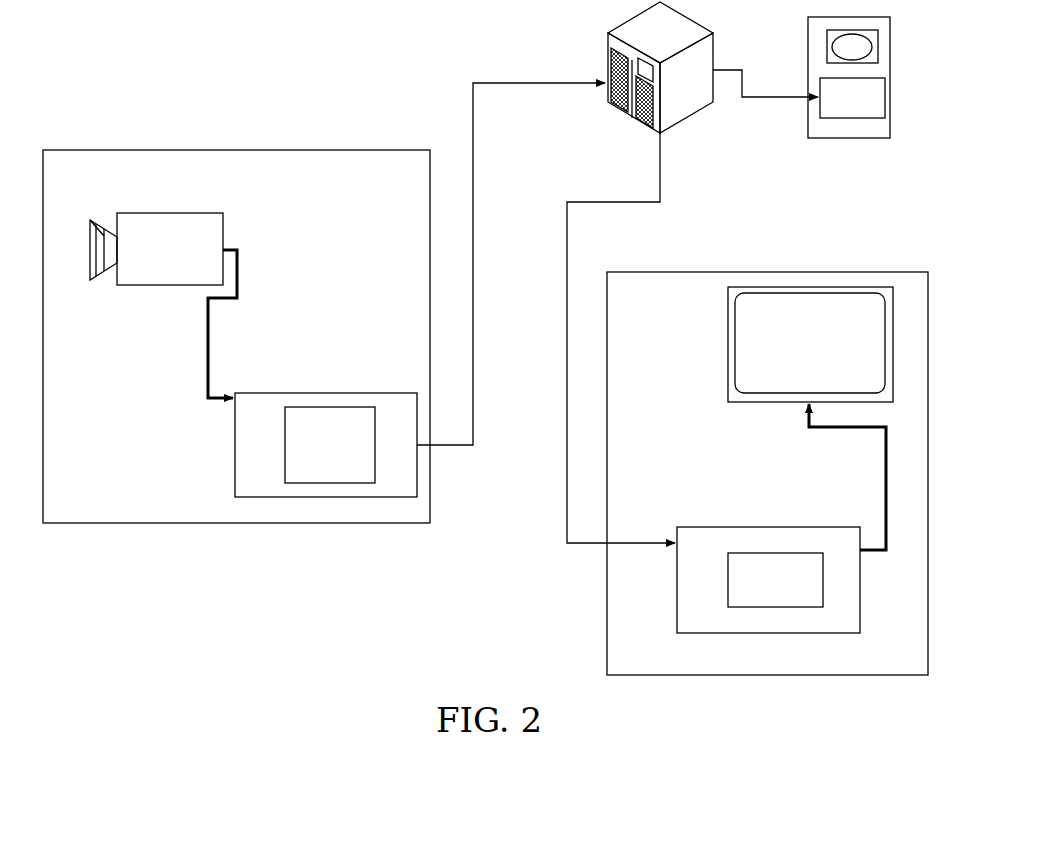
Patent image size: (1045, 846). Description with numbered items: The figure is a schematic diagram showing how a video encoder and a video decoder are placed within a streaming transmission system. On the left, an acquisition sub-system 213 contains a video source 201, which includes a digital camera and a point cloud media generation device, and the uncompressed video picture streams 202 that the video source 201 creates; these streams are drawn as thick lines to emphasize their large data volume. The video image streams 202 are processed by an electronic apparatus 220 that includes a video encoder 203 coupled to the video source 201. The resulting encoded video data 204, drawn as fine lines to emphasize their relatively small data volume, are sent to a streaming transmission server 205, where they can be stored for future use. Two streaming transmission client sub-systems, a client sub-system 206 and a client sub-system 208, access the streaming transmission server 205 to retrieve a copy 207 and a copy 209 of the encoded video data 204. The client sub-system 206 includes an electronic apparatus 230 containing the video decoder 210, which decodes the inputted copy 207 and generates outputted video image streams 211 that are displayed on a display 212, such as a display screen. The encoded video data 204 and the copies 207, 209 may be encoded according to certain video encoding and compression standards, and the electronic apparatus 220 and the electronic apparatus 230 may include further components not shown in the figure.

The video source 201 is at (170, 215).
The uncompressed video picture streams 202 is at (208, 332).
The video encoder 203 is at (330, 445).
The encoded video data 204 is at (473, 120).
The streaming transmission server 205 is at (607, 60).
The client sub-system 206 is at (607, 645).
The copy of the encoded video data 207 is at (567, 300).
The client sub-system 208 is at (808, 48).
The copy of the encoded video data 209 is at (742, 98).
The video decoder 210 is at (775, 580).
The outputted video image streams 211 is at (886, 517).
The display 212 is at (728, 372).
The acquisition sub-system 213 is at (262, 523).
The electronic apparatus 220 is at (325, 393).
The electronic apparatus 230 is at (677, 620).